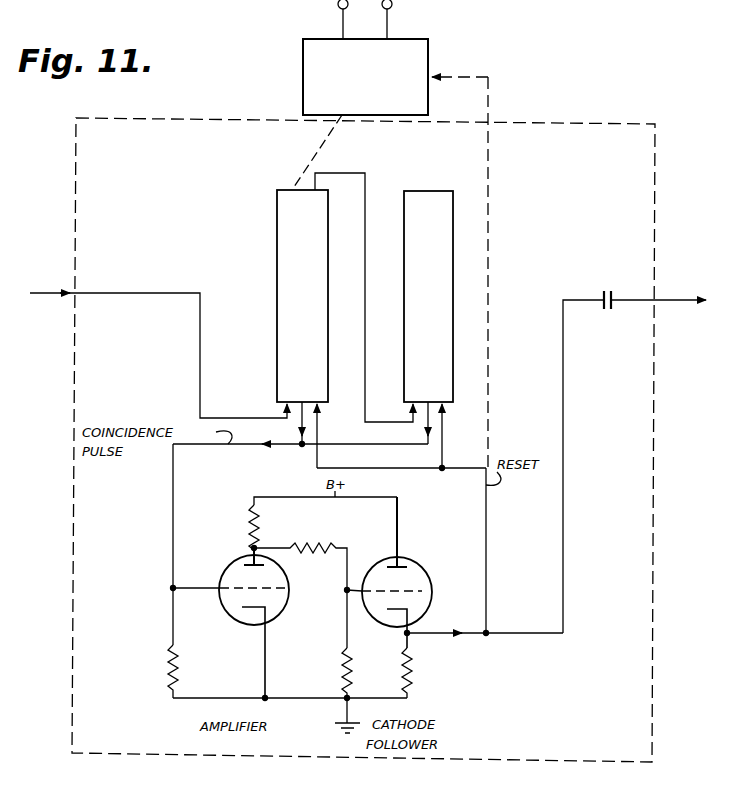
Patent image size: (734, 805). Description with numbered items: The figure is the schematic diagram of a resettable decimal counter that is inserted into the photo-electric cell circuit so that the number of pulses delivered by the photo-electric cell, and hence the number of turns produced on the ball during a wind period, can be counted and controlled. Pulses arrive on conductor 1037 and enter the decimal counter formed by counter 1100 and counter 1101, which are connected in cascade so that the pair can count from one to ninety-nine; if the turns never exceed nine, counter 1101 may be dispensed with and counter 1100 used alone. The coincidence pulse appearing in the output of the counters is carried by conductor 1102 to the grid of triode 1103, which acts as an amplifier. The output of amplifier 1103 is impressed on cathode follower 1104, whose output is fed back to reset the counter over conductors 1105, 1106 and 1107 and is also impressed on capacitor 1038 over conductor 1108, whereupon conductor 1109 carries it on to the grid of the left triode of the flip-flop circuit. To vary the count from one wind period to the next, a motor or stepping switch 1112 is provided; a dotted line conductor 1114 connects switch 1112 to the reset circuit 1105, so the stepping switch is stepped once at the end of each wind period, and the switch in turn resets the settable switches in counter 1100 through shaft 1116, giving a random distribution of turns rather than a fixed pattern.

The conductor 1037 is at (42, 293).
The capacitor 1038 is at (607, 291).
The counter 1100 is at (277, 223).
The counter 1101 is at (436, 193).
The conductor 1102 is at (173, 512).
The triode 1103 is at (243, 623).
The cathode follower 1104 is at (420, 568).
The conductor 1105 is at (486, 522).
The conductor 1106 is at (440, 462).
The conductor 1107 is at (318, 438).
The conductor 1108 is at (563, 432).
The conductor 1109 is at (668, 300).
The motor or stepping switch 1112 is at (303, 42).
The dotted line conductor 1114 is at (488, 168).
The shaft 1116 is at (318, 152).